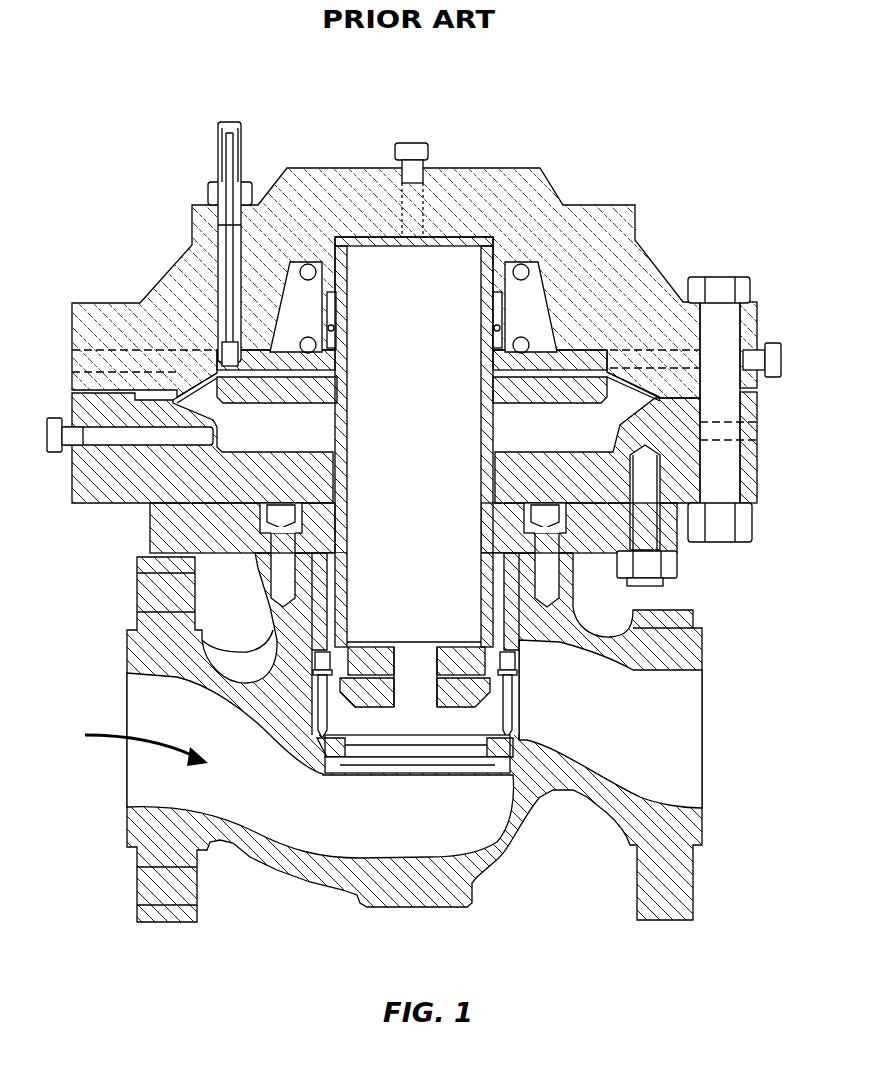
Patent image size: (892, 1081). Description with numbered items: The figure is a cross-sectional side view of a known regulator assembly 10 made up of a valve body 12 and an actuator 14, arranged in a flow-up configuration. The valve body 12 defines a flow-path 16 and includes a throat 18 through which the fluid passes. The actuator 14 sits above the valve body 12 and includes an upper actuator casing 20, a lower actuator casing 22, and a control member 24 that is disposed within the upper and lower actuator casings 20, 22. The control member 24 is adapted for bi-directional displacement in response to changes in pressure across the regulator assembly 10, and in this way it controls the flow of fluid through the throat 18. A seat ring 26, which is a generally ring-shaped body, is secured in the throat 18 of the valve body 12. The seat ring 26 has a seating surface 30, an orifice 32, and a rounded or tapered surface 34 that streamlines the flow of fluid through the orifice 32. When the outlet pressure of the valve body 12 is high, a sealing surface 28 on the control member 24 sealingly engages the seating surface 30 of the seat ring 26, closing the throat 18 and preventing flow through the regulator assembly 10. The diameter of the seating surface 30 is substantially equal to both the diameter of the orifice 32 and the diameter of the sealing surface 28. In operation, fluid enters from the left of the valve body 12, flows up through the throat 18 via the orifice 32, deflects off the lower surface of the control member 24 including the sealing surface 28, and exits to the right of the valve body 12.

The regulator assembly 10 is at (600, 112).
The valve body 12 is at (706, 892).
The actuator 14 is at (643, 200).
The flow-path 16 is at (118, 733).
The throat 18 is at (427, 785).
The upper actuator casing 20 is at (752, 325).
The lower actuator casing 22 is at (752, 475).
The control member 24 is at (505, 428).
The seat ring 26 is at (375, 758).
The sealing surface 28 is at (499, 698).
The seating surface 30 is at (495, 740).
The orifice 32 is at (490, 745).
The rounded or tapered surface 34 is at (340, 759).